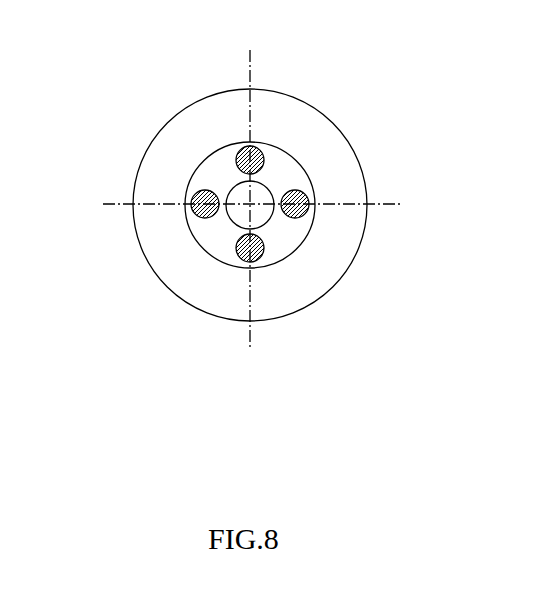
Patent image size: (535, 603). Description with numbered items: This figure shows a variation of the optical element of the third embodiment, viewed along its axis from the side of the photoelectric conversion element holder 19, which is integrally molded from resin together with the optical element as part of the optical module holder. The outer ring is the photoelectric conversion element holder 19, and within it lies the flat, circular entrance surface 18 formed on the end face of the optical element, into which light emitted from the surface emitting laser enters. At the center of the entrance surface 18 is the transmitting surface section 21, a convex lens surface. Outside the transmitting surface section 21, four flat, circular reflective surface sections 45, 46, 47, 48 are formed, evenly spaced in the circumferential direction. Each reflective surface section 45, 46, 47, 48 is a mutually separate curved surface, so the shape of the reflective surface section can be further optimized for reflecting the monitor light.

The entrance surface 18 is at (212, 148).
The photoelectric conversion element holder 19 is at (150, 142).
The transmitting surface section 21 is at (230, 221).
The reflective surface section 45 is at (263, 143).
The reflective surface section 46 is at (310, 198).
The reflective surface section 47 is at (263, 247).
The reflective surface section 48 is at (194, 214).